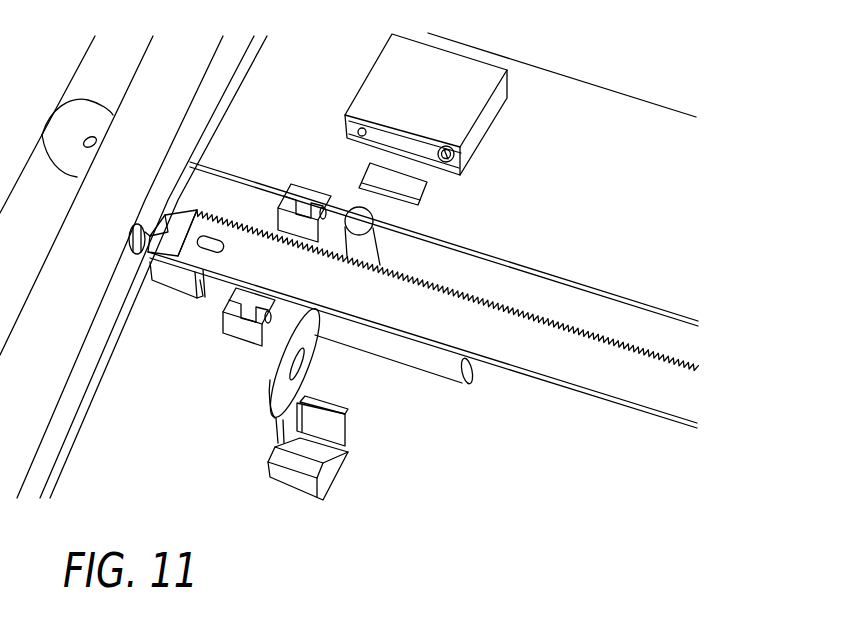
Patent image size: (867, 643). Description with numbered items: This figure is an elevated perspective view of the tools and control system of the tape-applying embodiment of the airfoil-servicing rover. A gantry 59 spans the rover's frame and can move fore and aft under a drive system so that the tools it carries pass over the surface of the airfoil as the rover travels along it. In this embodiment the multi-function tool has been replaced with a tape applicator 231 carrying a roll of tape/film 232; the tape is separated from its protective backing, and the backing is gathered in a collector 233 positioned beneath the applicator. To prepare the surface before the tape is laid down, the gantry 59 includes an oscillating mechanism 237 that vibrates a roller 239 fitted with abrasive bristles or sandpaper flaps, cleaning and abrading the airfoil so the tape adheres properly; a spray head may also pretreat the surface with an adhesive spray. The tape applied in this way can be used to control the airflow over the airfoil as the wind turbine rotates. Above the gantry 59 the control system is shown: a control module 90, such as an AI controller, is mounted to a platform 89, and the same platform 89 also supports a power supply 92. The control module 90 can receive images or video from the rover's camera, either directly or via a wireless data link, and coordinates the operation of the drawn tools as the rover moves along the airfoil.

The platform 89 is at (647, 245).
The power supply 92 is at (485, 118).
The control module 90 is at (427, 197).
The gantry 59 is at (616, 378).
The oscillating mechanism 237 is at (377, 248).
The roll of tape/film 232 is at (278, 384).
The tape applicator 231 is at (347, 417).
The collector 233 is at (337, 473).
The roller 239 is at (453, 384).